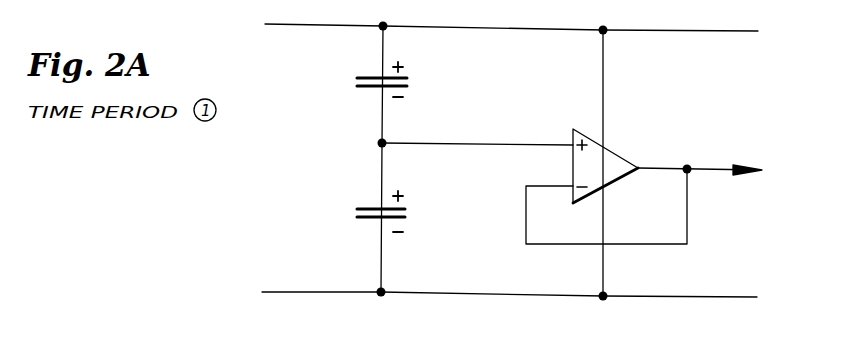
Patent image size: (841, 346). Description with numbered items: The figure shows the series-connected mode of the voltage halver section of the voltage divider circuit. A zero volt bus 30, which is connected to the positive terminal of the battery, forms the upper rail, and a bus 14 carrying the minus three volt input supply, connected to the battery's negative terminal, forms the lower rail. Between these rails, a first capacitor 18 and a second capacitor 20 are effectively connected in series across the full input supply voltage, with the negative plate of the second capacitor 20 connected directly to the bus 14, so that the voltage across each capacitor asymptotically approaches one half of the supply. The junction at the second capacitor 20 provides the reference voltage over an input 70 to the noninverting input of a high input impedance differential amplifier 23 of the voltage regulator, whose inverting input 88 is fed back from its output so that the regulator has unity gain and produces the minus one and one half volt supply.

The zero volt bus 30 is at (658, 30).
The bus 14 is at (652, 298).
The first capacitor 18 is at (371, 87).
The second capacitor 20 is at (372, 218).
The input 70 is at (470, 143).
The differential amplifier 23 is at (618, 152).
The inverting input 88 is at (526, 216).